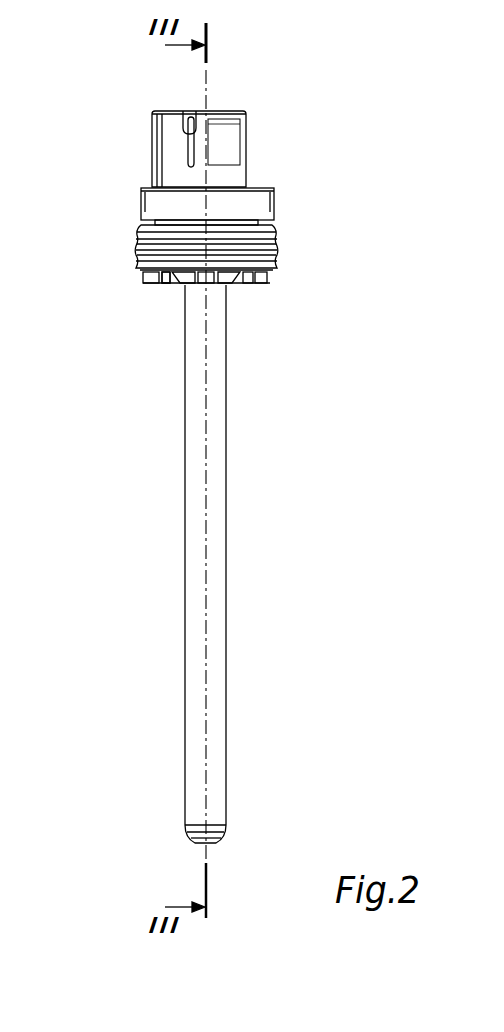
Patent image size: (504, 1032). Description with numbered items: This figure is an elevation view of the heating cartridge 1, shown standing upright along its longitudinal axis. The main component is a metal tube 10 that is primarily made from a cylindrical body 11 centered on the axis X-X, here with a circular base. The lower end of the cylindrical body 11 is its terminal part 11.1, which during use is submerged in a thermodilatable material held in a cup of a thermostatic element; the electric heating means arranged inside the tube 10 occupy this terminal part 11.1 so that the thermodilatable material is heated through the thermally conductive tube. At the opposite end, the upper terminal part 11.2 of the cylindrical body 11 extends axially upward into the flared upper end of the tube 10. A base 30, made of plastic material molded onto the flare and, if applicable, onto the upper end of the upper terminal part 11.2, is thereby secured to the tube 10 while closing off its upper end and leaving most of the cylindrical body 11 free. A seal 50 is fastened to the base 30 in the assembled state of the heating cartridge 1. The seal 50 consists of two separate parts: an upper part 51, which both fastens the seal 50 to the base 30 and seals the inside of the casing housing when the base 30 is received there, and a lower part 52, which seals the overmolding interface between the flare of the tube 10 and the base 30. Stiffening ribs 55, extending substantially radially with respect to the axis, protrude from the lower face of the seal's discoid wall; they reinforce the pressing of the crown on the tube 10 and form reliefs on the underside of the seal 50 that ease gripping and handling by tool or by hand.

The heating cartridge 1 is at (158, 767).
The metal tube 10 is at (176, 472).
The cylindrical body 11 is at (331, 479).
The terminal part 11.1 is at (210, 787).
The upper terminal part 11.2 is at (217, 307).
The base 30 is at (281, 187).
The seal 50 is at (436, 240).
The upper part 51 is at (277, 242).
The lower part 52 is at (262, 283).
The stiffening ribs 55 is at (162, 285).